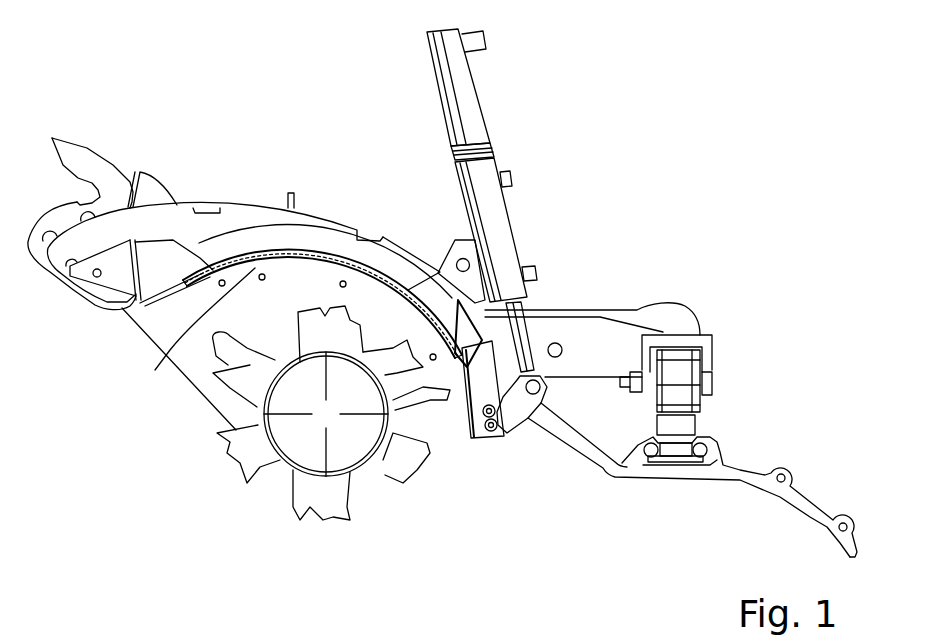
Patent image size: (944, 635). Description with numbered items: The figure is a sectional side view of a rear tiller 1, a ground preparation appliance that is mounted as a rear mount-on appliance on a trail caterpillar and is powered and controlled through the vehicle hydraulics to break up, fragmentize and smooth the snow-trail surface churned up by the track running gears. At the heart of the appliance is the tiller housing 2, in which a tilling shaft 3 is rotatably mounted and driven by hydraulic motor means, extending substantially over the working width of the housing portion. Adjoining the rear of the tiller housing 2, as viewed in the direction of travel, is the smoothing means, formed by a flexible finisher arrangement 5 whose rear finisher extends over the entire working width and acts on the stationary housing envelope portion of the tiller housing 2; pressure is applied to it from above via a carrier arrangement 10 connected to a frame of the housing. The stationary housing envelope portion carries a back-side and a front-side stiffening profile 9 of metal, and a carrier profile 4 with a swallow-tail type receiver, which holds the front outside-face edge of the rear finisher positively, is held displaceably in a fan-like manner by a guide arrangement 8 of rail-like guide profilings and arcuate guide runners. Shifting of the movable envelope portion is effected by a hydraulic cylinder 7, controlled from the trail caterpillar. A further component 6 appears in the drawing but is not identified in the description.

The rear tiller 1 is at (276, 107).
The tiller housing 2 is at (262, 248).
The tilling shaft 3 is at (218, 478).
The carrier profile 4 is at (463, 440).
The finisher arrangement 5 is at (650, 477).
The pivot clevis 6 is at (523, 433).
The hydraulic cylinder 7 is at (503, 225).
The guide arrangement 8 is at (360, 257).
The stiffening profile 9 is at (192, 233).
The carrier arrangement 10 is at (679, 299).